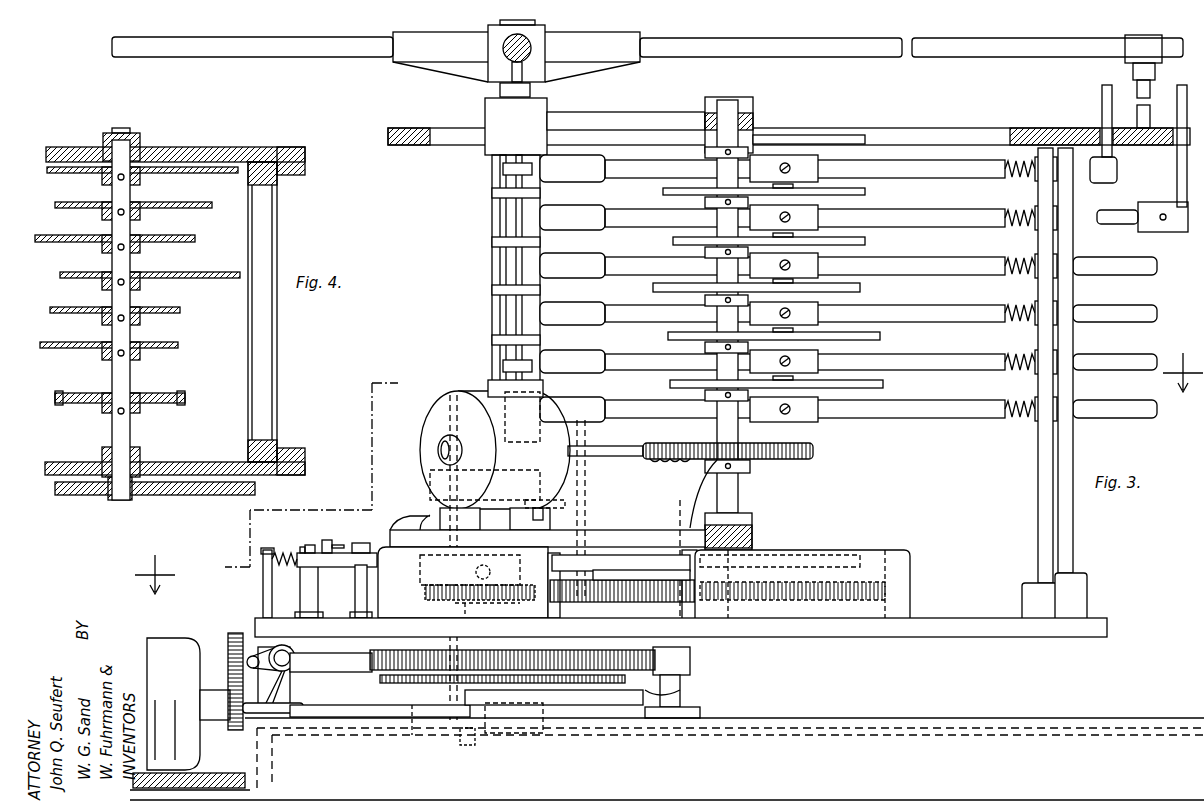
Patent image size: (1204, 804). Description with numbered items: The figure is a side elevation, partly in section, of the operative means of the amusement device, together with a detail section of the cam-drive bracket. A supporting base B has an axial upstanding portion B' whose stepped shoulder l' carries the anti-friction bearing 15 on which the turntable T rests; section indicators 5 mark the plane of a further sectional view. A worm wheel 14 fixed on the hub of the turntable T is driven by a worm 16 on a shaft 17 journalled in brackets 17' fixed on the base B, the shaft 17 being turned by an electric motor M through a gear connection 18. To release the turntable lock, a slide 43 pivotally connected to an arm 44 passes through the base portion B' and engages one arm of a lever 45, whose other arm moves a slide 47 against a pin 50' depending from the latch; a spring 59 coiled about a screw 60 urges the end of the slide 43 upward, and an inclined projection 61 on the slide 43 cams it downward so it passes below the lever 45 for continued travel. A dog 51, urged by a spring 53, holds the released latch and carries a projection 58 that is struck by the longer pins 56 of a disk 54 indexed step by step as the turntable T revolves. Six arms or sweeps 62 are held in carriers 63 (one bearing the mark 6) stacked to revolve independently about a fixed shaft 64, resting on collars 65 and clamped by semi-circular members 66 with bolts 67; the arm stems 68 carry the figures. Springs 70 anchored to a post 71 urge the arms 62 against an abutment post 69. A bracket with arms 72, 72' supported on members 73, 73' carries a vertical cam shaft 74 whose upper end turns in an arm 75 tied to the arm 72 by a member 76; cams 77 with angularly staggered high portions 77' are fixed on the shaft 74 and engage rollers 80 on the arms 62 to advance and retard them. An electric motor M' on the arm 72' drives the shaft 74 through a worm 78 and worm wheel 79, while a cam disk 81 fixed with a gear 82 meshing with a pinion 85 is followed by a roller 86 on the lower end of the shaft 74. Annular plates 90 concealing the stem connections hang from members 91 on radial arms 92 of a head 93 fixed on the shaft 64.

In FIG. 3, the section line 5- 5 is at (669, 480).
In FIG. 3, the cylinders 6 is at (572, 288).
In FIG. 3, the worm wheel 14 is at (678, 692).
In FIG. 3, the anti-friction bearing 15 is at (590, 706).
In FIG. 3, the worm 16 is at (540, 656).
In FIG. 3, the shaft 17 is at (331, 674).
In FIG. 3, the brackets 17' is at (486, 659).
In FIG. 3, the gear connection 18 is at (232, 634).
In FIG. 3, the slide 43 is at (348, 718).
In FIG. 3, the arm 44 is at (278, 700).
In FIG. 3, the lever 45 is at (490, 605).
In FIG. 3, the slide 47 is at (476, 570).
In FIG. 3, the post 50' is at (350, 591).
In FIG. 3, the dog 51 is at (308, 548).
In FIG. 3, the spring 53 is at (276, 553).
In FIG. 3, the disk 54 is at (331, 568).
In FIG. 3, the pins 56 is at (397, 540).
In FIG. 3, the projection 58 is at (328, 545).
In FIG. 3, the spring 59 is at (470, 735).
In FIG. 3, the screw 60 is at (465, 750).
In FIG. 3, the projection 61 is at (380, 678).
In FIG. 3, the arms 62 is at (925, 172).
In FIG. 3, the carriers 63 is at (598, 318).
In FIG. 3, the shaft 64 is at (500, 91).
In FIG. 3, the collars 65 is at (492, 194).
In FIG. 3, the semi-circular members 66 is at (492, 242).
In FIG. 3, the bolts 67 is at (503, 170).
In FIG. 3, the arm stems 68 is at (1102, 102).
In FIG. 3, the post 69 is at (1073, 519).
In FIG. 3, the springs 70 is at (1012, 182).
In FIG. 3, the post 71 is at (1038, 530).
In FIG. 4, the bracket arm 72 is at (175, 456).
In FIG. 3, the bracket arm 72 is at (553, 503).
In FIG. 3, the bracket arm 72' is at (468, 509).
In FIG. 3, the member 73 is at (805, 570).
In FIG. 3, the member 73' is at (463, 582).
In FIG. 4, the cam carrying shaft 74 is at (132, 375).
In FIG. 3, the cam carrying shaft 74 is at (717, 326).
In FIG. 4, the arm 75 is at (200, 148).
In FIG. 3, the arm 75 is at (586, 118).
In FIG. 4, the member 76 is at (278, 364).
In FIG. 4, the cams 77 is at (136, 263).
In FIG. 3, the cams 77 is at (752, 217).
In FIG. 4, the high portions 77' is at (152, 267).
In FIG. 3, the worm 78 is at (682, 461).
In FIG. 4, the worm wheel 79 is at (185, 404).
In FIG. 3, the worm wheel 79 is at (785, 460).
In FIG. 3, the cam following rollers 80 is at (798, 152).
In FIG. 4, the disk 81 is at (195, 496).
In FIG. 3, the disk 81 is at (630, 556).
In FIG. 3, the gear 82 is at (660, 602).
In FIG. 3, the pinion 85 is at (502, 592).
In FIG. 4, the roller 86 is at (112, 494).
In FIG. 3, the annular plates 90 is at (408, 146).
In FIG. 3, the members 91 is at (1150, 92).
In FIG. 3, the arms 92 is at (328, 58).
In FIG. 3, the head 93 is at (545, 32).
In FIG. 3, the supporting base B is at (730, 736).
In FIG. 3, the axial upstanding portion B' is at (724, 739).
In FIG. 3, the electric motor M is at (667, 719).
In FIG. 3, the electric motor M' is at (480, 450).
In FIG. 3, the turntable T is at (822, 638).
In FIG. 3, the lever l' is at (404, 733).